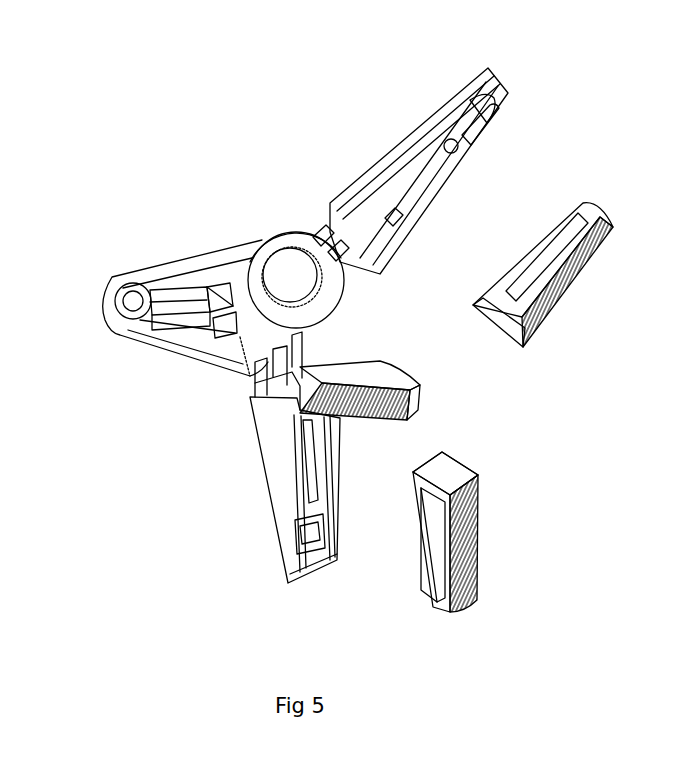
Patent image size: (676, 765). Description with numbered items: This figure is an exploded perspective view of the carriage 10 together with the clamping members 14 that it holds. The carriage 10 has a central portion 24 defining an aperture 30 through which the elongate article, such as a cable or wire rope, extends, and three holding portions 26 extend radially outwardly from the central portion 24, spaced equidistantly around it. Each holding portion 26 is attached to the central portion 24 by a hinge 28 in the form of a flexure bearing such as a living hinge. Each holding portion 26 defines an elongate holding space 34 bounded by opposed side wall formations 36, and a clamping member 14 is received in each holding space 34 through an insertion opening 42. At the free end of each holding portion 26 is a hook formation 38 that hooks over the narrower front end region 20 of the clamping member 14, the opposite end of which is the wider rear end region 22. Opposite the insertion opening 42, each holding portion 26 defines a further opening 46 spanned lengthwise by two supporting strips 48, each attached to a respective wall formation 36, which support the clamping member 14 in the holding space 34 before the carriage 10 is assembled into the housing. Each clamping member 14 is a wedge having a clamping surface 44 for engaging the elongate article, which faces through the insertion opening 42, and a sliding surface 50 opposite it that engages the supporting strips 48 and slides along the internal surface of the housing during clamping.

The carriage 10 is at (218, 215).
The clamping member 14 is at (545, 252).
The front end region 20 is at (302, 390).
The rear end region 22 is at (493, 330).
The central portion 24 is at (293, 227).
The holding portion 26 is at (193, 353).
The hinge 28 is at (267, 368).
The aperture 30 is at (302, 288).
The holding space 34 is at (221, 332).
The side wall formation 36 is at (220, 288).
The hook formation 38 is at (137, 303).
The insertion opening 42 is at (167, 333).
The clamping surface 44 is at (563, 283).
The further opening 46 is at (160, 318).
The supporting strip 48 is at (210, 328).
The sliding surface 50 is at (552, 232).